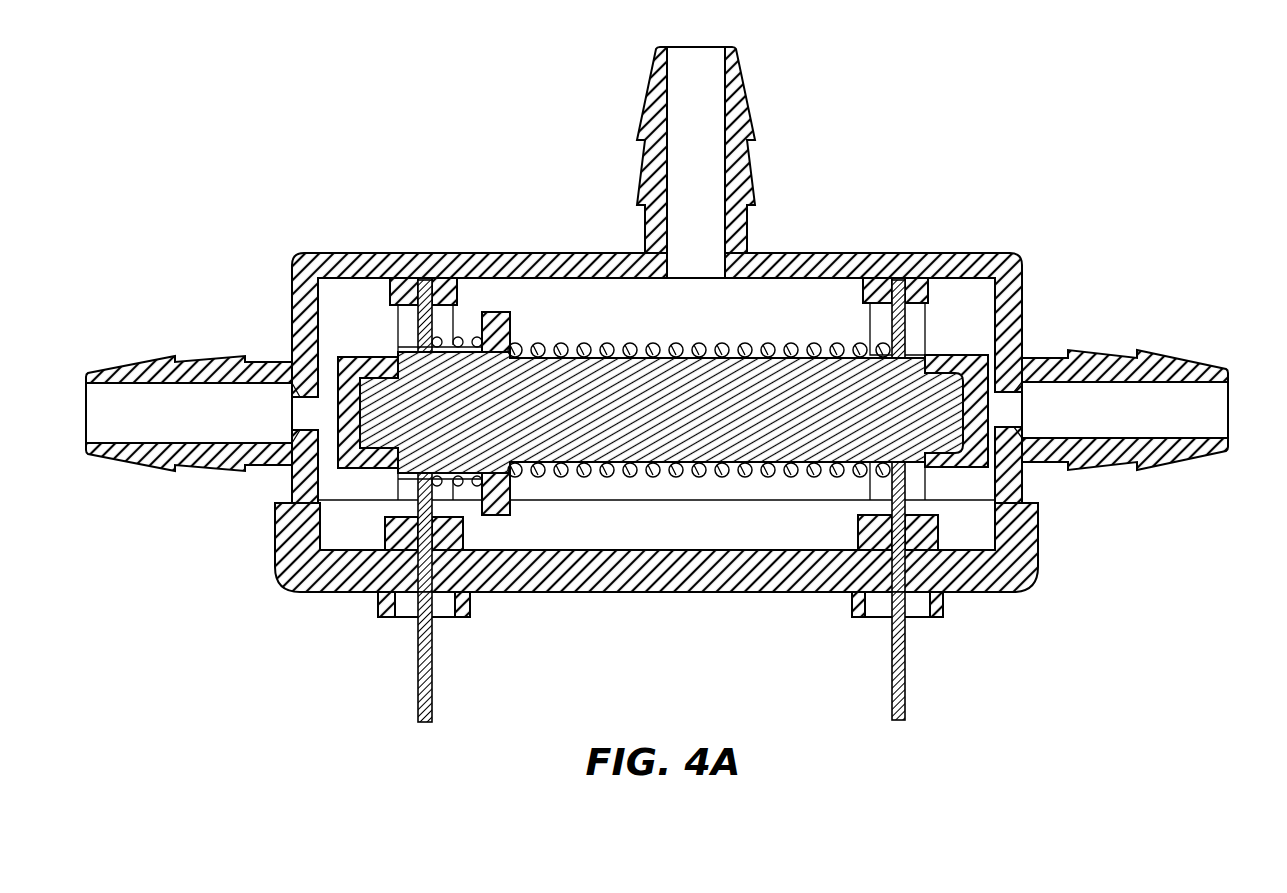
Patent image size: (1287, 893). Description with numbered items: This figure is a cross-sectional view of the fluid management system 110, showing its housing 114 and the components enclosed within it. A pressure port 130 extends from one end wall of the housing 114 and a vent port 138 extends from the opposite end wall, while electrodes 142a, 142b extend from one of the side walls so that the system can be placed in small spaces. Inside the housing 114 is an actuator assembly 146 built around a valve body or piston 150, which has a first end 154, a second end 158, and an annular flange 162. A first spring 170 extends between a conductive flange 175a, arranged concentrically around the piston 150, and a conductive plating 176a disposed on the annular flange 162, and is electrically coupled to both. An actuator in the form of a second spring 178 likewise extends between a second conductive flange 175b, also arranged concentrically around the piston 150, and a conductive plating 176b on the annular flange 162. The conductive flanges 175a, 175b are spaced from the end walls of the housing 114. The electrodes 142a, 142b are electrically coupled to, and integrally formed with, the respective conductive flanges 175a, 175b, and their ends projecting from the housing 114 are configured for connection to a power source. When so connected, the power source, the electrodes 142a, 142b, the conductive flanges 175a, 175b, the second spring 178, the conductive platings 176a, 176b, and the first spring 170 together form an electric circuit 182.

The fluid management system 110 is at (214, 164).
The housing 114 is at (312, 624).
The pressure port 130 is at (153, 356).
The vent port 138 is at (1163, 364).
The electrode 142a is at (893, 677).
The electrode 142b is at (417, 677).
The actuator assembly 146 is at (593, 326).
The piston 150 is at (716, 396).
The first end 154 is at (340, 402).
The second end 158 is at (945, 385).
The annular flange 162 is at (485, 372).
The first spring 170 is at (775, 349).
The conductive flange 175a is at (903, 334).
The conductive flange 175b is at (427, 254).
The conductive plating 176a is at (528, 350).
The conductive plating 176b is at (470, 490).
The second spring 178 is at (413, 310).
The electric circuit 182 is at (821, 324).